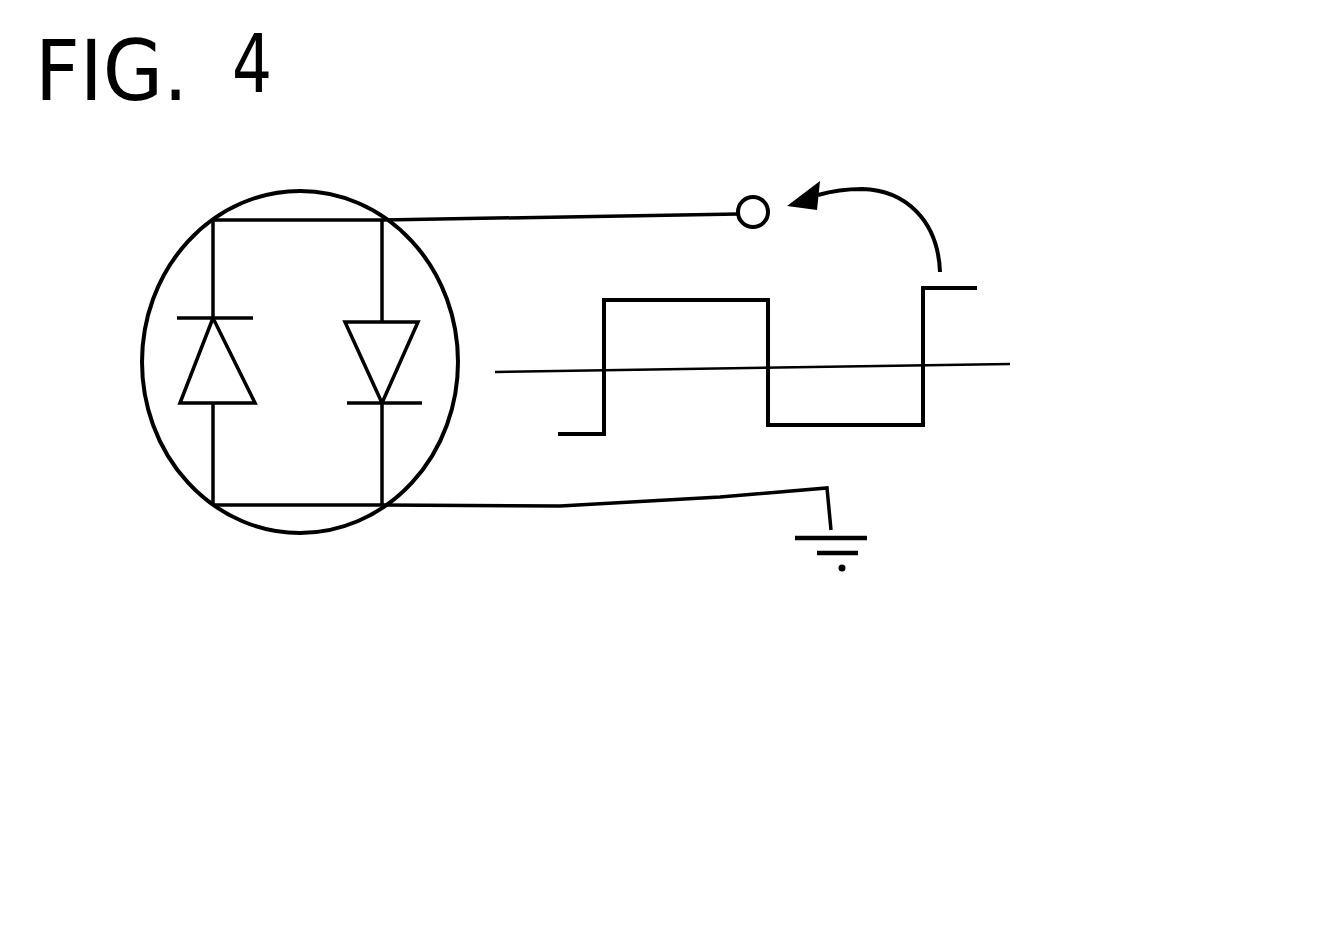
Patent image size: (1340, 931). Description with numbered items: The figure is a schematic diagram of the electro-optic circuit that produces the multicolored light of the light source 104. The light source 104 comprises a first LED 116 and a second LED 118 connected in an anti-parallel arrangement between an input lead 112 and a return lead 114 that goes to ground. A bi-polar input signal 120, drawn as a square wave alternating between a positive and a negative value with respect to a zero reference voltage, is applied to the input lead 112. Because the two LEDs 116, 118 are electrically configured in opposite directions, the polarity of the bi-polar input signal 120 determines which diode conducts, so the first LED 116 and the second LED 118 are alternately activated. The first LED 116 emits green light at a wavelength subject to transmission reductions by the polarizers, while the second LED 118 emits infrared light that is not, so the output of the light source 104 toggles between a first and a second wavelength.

The light source 104 is at (239, 357).
The input lead 112 is at (655, 214).
The ground lead 114 is at (568, 507).
The first LED 116 is at (370, 410).
The second LED 118 is at (233, 317).
The bi-polar input signal 120 is at (742, 293).